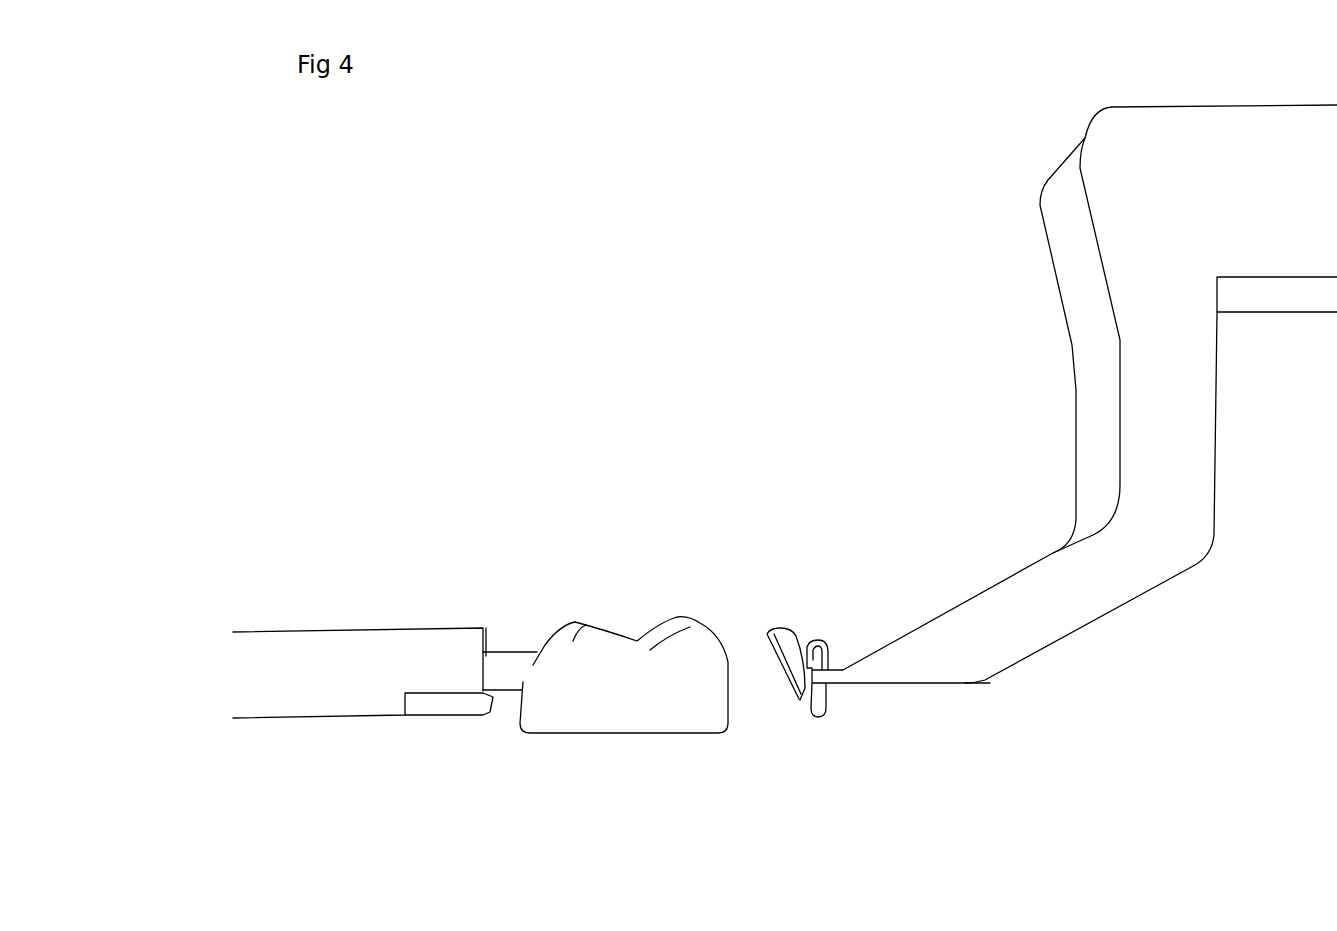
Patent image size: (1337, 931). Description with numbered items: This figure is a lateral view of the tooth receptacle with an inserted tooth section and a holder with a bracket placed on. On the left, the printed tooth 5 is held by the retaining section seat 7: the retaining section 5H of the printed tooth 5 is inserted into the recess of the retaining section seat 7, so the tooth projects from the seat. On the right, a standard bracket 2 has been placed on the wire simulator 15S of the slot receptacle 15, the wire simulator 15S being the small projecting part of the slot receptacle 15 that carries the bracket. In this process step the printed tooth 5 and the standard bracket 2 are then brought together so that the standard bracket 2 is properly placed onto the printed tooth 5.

The retaining section seat 7 is at (432, 660).
The retaining section 5H is at (502, 670).
The printed tooth 5 is at (608, 720).
The standard bracket 2 is at (795, 620).
The slot receptacle 15 is at (950, 443).
The wire simulator 15S is at (837, 675).